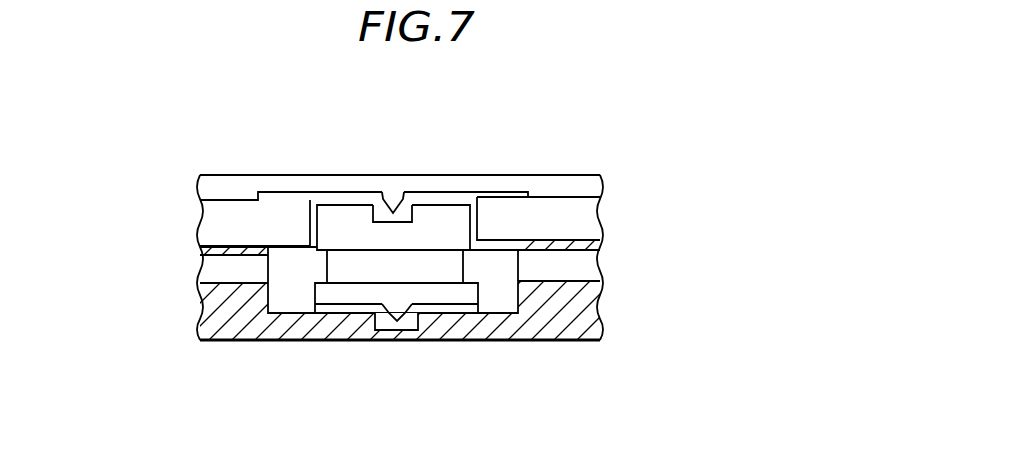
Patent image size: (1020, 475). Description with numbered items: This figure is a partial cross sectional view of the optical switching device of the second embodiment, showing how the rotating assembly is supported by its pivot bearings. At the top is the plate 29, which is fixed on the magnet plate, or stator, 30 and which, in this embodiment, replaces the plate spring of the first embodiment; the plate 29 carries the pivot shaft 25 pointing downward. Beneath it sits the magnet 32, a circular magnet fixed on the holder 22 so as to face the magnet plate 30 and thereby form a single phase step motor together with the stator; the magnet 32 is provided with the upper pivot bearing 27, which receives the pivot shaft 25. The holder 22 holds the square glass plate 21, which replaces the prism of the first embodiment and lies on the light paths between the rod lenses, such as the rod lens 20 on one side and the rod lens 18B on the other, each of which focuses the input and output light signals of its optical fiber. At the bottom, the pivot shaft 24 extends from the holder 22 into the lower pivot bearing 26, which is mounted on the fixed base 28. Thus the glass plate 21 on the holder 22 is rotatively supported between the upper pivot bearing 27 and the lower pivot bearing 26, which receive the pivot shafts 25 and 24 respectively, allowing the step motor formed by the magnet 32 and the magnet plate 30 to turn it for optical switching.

The plate 29 is at (570, 182).
The magnet plate (stator) 30 is at (580, 214).
The pivot shaft 25 is at (391, 207).
The magnet 32 is at (332, 218).
The upper pivot bearing 27 is at (411, 214).
The rod lens 20 is at (218, 267).
The rod lens 18B is at (583, 266).
The base 28 is at (590, 300).
The lower pivot bearing 26 is at (406, 318).
The holder 22 is at (325, 293).
The pivot shaft 24 is at (398, 316).
The glass plate 21 is at (448, 267).